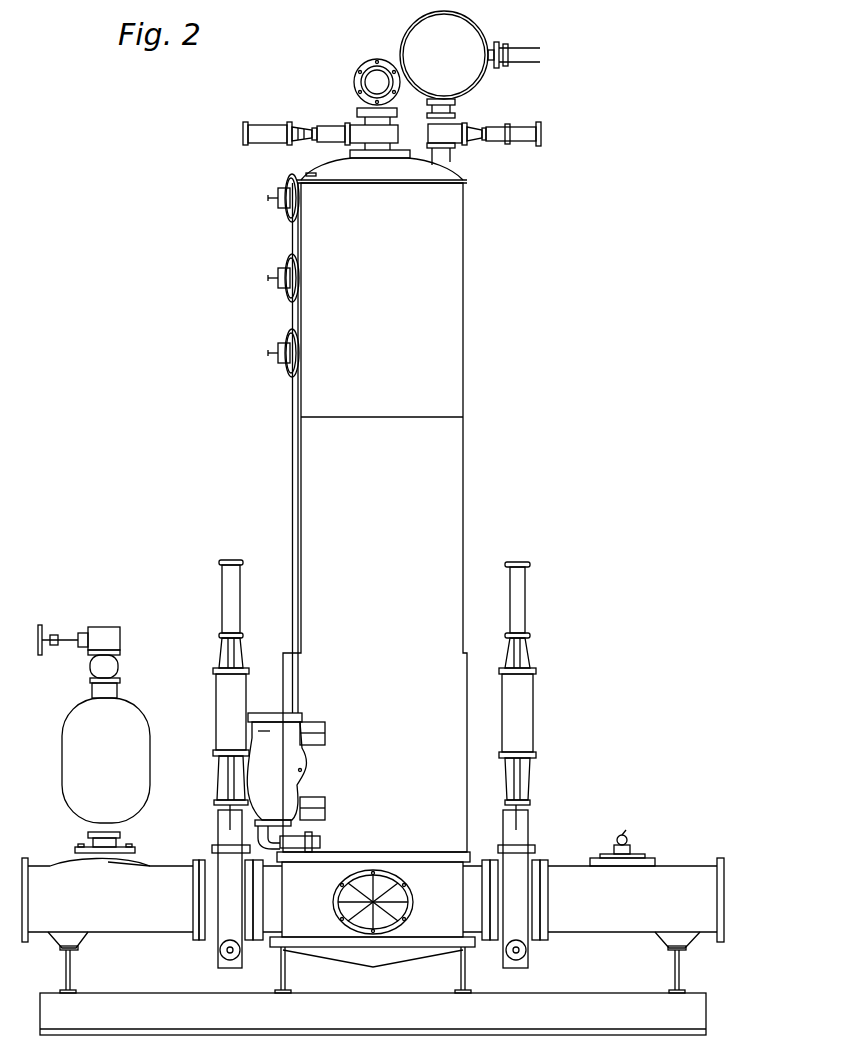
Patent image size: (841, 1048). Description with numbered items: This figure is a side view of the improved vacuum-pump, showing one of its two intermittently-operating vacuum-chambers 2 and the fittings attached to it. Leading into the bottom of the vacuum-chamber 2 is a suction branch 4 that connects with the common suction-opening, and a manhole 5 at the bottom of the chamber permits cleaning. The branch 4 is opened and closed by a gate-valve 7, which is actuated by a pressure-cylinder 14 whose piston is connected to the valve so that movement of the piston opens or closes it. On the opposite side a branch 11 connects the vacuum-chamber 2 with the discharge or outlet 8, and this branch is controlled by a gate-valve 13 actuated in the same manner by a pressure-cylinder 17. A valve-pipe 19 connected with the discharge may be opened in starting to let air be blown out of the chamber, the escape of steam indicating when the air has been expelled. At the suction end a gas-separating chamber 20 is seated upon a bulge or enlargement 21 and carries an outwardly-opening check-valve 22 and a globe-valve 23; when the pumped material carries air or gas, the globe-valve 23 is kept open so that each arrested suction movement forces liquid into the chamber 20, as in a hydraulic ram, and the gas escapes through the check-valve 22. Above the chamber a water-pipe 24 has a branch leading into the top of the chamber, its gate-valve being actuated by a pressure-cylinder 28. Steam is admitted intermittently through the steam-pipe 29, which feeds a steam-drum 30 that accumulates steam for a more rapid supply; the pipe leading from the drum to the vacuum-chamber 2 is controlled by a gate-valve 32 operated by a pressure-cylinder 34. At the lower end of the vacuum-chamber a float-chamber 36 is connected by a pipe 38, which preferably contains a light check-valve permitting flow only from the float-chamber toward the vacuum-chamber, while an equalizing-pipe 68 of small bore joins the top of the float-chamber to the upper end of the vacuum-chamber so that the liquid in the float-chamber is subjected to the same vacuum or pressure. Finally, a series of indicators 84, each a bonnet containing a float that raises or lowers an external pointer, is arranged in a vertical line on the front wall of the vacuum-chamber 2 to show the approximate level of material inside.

The vacuum-chamber 2 is at (372, 571).
The branch 4 is at (152, 925).
The manhole 5 is at (400, 907).
The valve 7 is at (227, 886).
The discharge or outlet 8 is at (729, 900).
The branch 11 is at (590, 929).
The valve 13 is at (528, 840).
The pressure-cylinder 14 is at (222, 682).
The pressure-cylinder 17 is at (533, 708).
The valve-pipe 19 is at (622, 845).
The gas-separating chamber 20 is at (106, 750).
The bulge or enlargement 21 is at (70, 858).
The check-valve 22 is at (117, 664).
The globe-valve 23 is at (92, 640).
The water-pipe 24 is at (398, 60).
The pressure-cylinder 28 is at (320, 124).
The steam-pipe 29 is at (514, 46).
The steam-drum 30 is at (444, 88).
The controlling-valve 32 is at (455, 124).
The pressure-cylinder 34 is at (548, 113).
The float-chamber 36 is at (286, 781).
The pipe 38 is at (322, 841).
The equalizing-pipe 68 is at (298, 400).
The indicators 84 is at (291, 212).